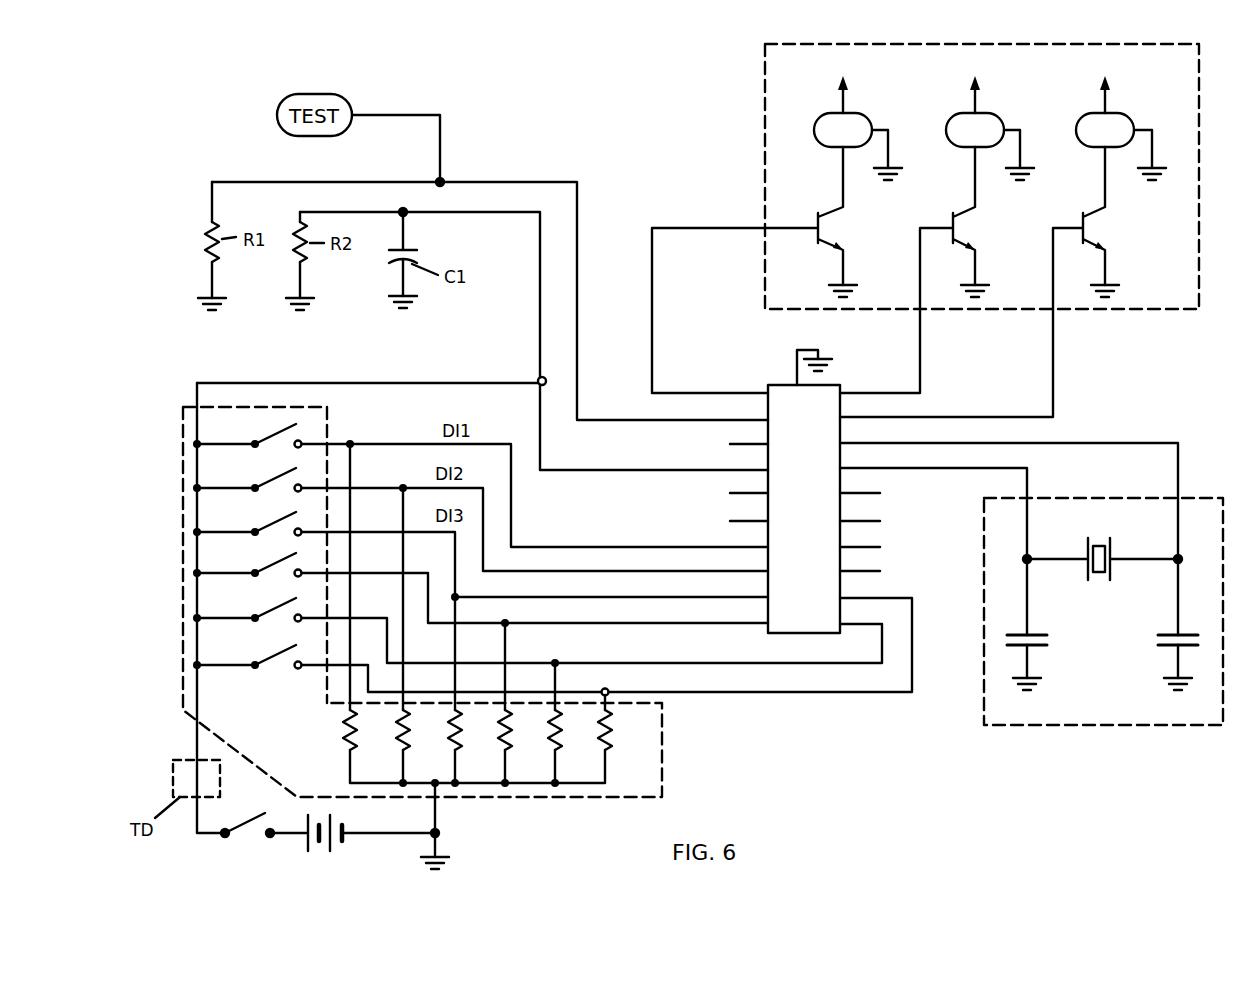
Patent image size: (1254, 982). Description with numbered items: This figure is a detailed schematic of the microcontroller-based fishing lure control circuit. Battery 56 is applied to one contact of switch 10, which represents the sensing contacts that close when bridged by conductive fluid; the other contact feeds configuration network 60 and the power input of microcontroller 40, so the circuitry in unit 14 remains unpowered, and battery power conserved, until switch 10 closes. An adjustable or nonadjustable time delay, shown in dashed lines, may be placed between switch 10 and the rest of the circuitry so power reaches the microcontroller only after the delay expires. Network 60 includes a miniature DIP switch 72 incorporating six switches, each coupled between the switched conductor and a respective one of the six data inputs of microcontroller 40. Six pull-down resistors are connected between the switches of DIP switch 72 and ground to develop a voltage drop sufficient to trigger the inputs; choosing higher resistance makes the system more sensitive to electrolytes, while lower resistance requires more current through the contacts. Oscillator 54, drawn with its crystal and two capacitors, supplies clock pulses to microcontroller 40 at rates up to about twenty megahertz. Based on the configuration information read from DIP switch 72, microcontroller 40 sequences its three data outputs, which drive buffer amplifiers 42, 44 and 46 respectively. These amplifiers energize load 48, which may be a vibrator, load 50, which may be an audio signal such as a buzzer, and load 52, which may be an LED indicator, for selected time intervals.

The switch 10 is at (243, 843).
The unit 14 is at (586, 837).
The microcontroller 40 is at (789, 501).
The buffer amplifier 42 is at (818, 238).
The buffer amplifier 44 is at (953, 218).
The buffer amplifier 46 is at (1083, 220).
The load 48 is at (828, 113).
The load 50 is at (958, 113).
The load 52 is at (1090, 113).
The oscillator 54 is at (1195, 498).
The battery 56 is at (306, 845).
The configuration network 60 is at (160, 628).
The DIP switch 72 is at (287, 711).